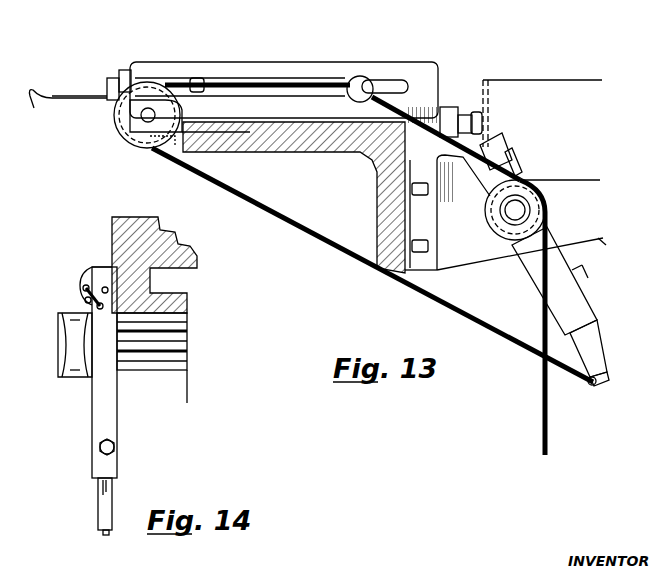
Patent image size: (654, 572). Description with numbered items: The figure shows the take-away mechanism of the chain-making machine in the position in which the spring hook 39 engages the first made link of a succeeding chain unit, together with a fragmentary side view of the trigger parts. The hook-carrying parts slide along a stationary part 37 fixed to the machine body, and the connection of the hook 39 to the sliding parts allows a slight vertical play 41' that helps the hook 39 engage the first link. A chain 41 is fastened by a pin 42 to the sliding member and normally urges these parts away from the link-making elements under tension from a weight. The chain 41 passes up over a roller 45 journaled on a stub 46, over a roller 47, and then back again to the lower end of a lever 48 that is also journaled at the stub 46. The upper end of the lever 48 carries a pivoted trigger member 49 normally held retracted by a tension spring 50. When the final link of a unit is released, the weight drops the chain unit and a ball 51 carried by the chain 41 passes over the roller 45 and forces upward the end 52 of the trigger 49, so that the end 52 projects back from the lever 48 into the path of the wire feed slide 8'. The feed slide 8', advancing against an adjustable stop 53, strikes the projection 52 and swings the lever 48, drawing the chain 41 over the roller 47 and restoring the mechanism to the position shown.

In FIG. 13, the feed slide 8' is at (521, 160).
In FIG. 14, the feed slide 8' is at (154, 250).
In FIG. 13, the stationary part 37 is at (347, 64).
In FIG. 13, the spring hook 39 is at (74, 96).
In FIG. 13, the chain 41 is at (372, 270).
In FIG. 13, the vertical play 41' is at (115, 63).
In FIG. 13, the pin 42 is at (200, 80).
In FIG. 13, the roller 45 is at (490, 212).
In FIG. 14, the roller 45 is at (58, 334).
In FIG. 13, the stub 46 is at (518, 210).
In FIG. 14, the stub 46 is at (157, 352).
In FIG. 13, the roller 47 is at (118, 126).
In FIG. 13, the lever 48 is at (583, 310).
In FIG. 14, the lever 48 is at (100, 416).
In FIG. 13, the trigger member 49 is at (486, 152).
In FIG. 14, the trigger member 49 is at (88, 282).
In FIG. 13, the tension spring 50 is at (512, 166).
In FIG. 14, the tension spring 50 is at (100, 268).
In FIG. 13, the ball 51 is at (362, 84).
In FIG. 14, the ball 51 is at (84, 306).
In FIG. 14, the end of trigger 52 is at (108, 264).
In FIG. 13, the adjustable stop 53 is at (450, 108).